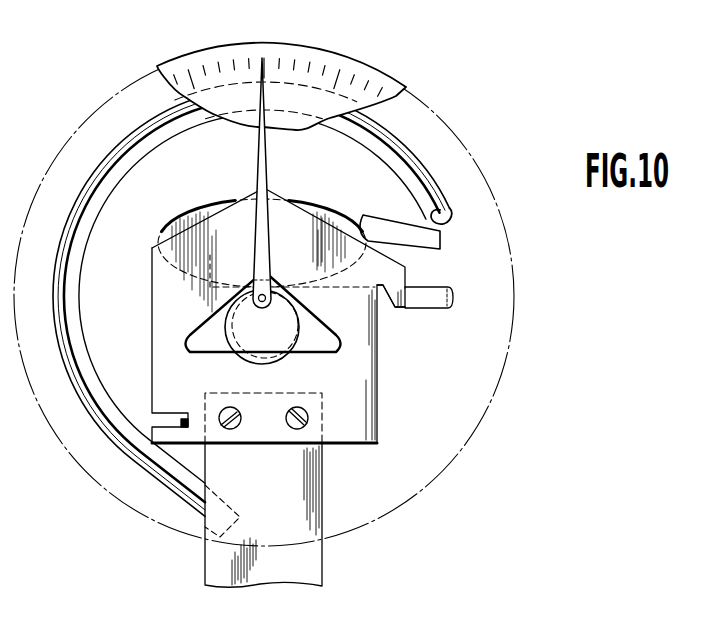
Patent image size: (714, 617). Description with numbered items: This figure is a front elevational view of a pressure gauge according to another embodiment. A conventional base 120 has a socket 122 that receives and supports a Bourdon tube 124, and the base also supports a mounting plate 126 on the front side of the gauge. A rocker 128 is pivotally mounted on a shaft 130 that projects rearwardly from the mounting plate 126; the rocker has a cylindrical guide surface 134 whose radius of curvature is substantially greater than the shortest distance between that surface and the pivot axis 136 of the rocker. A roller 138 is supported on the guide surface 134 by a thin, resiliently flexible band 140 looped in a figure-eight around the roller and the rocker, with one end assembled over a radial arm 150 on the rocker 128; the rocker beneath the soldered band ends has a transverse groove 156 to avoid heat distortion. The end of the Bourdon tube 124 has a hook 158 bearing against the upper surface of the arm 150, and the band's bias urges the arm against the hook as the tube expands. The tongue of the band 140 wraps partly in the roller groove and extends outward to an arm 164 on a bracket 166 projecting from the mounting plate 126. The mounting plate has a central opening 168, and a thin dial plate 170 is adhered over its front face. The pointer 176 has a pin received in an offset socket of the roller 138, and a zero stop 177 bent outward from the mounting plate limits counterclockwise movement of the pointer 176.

The base 120 is at (312, 563).
The socket 122 is at (225, 494).
The Bourdon tube 124 is at (143, 158).
The mounting plate 126 is at (356, 449).
The rocker 128 is at (174, 224).
The shaft 130 is at (258, 262).
The guide surface 134 is at (210, 268).
The pivot axis 136 is at (253, 220).
The roller 138 is at (262, 343).
The band 140 is at (333, 207).
The radial arm 150 is at (398, 232).
The transverse groove 156 is at (325, 213).
The hook 158 is at (445, 221).
The arm 164 is at (453, 298).
The bracket 166 is at (417, 304).
The central opening 168 is at (211, 353).
The dial plate 170 is at (227, 50).
The pointer 176 is at (267, 163).
The zero stop 177 is at (188, 413).